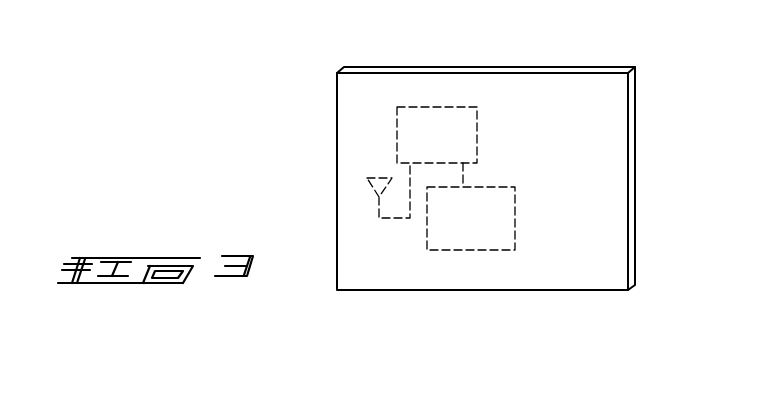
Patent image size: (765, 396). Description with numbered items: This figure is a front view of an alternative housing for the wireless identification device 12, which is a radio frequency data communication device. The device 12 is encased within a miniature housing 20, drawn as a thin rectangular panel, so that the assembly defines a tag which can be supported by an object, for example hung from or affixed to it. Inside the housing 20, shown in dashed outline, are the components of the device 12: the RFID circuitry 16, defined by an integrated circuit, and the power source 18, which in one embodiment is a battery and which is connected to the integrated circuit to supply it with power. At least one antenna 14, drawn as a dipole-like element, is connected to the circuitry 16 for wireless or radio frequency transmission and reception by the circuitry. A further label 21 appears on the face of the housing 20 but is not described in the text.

The wireless identification device 12 is at (514, 106).
The antenna 14 is at (372, 176).
The RFID circuitry 16 is at (437, 107).
The power source 18 is at (467, 250).
The miniature housing 20 is at (337, 191).
The display screen 21 is at (583, 266).